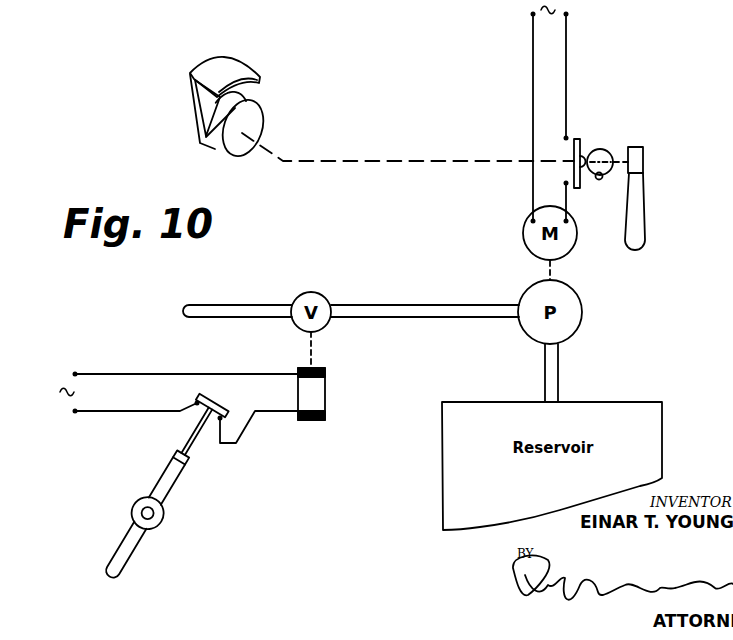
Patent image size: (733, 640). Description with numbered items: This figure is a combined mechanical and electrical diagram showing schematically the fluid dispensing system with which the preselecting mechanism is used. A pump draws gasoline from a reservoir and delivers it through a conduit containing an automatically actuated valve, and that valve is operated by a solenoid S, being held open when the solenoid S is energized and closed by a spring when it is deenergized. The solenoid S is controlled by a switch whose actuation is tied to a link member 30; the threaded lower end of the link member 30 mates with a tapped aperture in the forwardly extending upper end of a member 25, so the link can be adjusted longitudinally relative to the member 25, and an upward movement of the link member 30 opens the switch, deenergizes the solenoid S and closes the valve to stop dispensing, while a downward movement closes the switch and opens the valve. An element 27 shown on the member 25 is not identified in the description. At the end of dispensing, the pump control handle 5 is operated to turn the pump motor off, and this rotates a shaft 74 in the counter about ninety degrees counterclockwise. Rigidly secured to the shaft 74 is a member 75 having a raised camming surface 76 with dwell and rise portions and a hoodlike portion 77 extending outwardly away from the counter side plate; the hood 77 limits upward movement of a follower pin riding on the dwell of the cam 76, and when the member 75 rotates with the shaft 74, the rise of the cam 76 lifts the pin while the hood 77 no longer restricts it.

The pump control handle 5 is at (634, 223).
The member 25 is at (168, 478).
The pivot pin 27 is at (154, 516).
The link member 30 is at (192, 443).
The shaft 74 is at (435, 163).
The member 75 is at (207, 155).
The raised camming surface 76 is at (258, 110).
The hoodlike portion 77 is at (242, 62).
The solenoid S is at (325, 368).